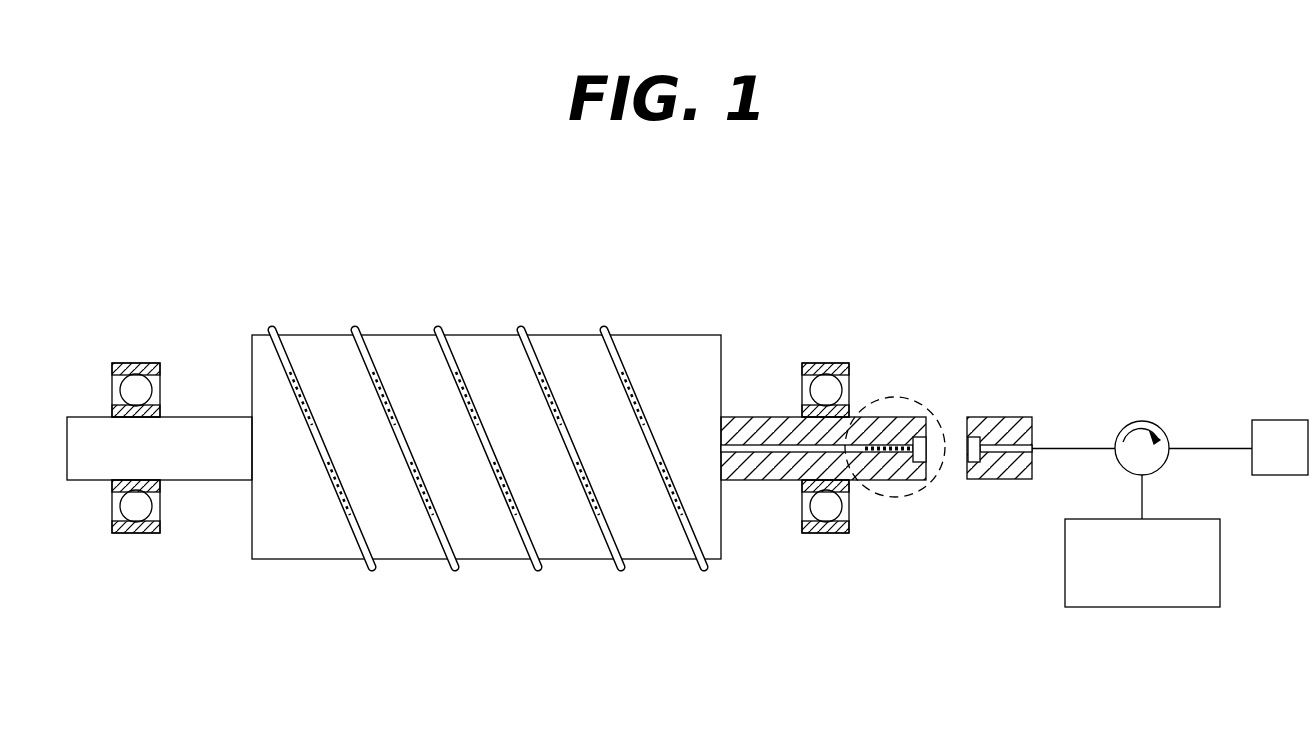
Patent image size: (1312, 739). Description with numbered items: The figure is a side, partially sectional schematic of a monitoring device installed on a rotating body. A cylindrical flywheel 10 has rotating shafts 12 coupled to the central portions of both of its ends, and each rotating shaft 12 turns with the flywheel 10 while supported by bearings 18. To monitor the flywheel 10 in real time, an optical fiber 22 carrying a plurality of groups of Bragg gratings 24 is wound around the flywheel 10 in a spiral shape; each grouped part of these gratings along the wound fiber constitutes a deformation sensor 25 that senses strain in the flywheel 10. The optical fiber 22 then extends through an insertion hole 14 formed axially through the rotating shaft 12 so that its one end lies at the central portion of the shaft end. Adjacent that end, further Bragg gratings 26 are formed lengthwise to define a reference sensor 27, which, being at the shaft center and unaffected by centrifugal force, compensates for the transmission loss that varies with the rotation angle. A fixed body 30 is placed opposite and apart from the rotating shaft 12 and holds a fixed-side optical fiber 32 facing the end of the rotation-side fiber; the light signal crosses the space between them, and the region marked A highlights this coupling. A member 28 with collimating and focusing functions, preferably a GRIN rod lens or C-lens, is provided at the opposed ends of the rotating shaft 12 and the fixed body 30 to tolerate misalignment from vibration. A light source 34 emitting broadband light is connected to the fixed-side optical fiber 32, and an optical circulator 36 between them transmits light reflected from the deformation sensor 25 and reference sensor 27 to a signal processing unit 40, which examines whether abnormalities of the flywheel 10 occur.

The flywheel 10 is at (483, 523).
The rotating shaft 12 is at (785, 480).
The insertion hole 14 is at (738, 480).
The bearings 18 is at (825, 510).
The optical fiber 22 is at (747, 417).
The Bragg gratings 24 is at (637, 430).
The deformation sensor 25 is at (587, 512).
The Bragg gratings 26 is at (901, 445).
The reference sensor 27 is at (885, 455).
The member 28 is at (927, 448).
The fixed body 30 is at (1018, 479).
The fixed-side optical fiber 32 is at (1012, 417).
The light source 34 is at (1143, 608).
The optical circulator 36 is at (1140, 420).
The signal processing unit 40 is at (1278, 477).
The detail region A is at (910, 400).